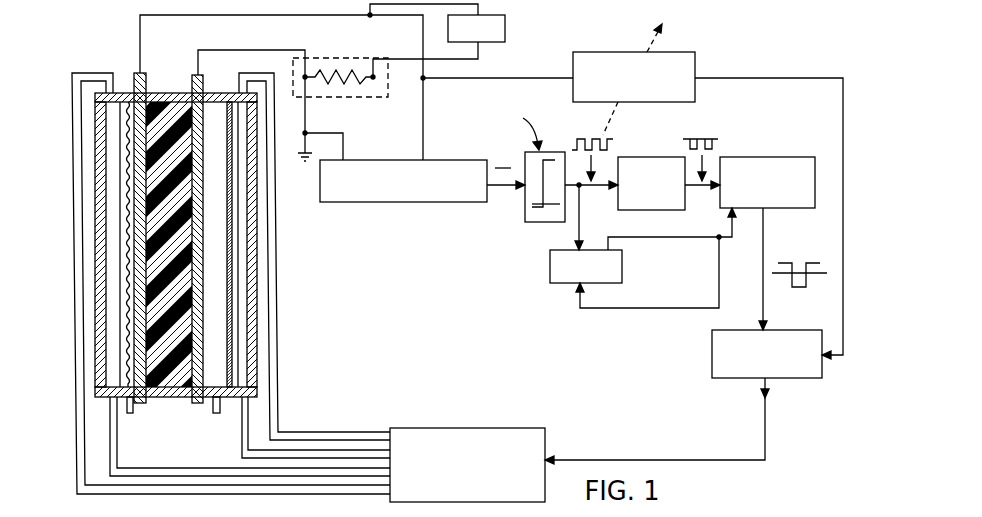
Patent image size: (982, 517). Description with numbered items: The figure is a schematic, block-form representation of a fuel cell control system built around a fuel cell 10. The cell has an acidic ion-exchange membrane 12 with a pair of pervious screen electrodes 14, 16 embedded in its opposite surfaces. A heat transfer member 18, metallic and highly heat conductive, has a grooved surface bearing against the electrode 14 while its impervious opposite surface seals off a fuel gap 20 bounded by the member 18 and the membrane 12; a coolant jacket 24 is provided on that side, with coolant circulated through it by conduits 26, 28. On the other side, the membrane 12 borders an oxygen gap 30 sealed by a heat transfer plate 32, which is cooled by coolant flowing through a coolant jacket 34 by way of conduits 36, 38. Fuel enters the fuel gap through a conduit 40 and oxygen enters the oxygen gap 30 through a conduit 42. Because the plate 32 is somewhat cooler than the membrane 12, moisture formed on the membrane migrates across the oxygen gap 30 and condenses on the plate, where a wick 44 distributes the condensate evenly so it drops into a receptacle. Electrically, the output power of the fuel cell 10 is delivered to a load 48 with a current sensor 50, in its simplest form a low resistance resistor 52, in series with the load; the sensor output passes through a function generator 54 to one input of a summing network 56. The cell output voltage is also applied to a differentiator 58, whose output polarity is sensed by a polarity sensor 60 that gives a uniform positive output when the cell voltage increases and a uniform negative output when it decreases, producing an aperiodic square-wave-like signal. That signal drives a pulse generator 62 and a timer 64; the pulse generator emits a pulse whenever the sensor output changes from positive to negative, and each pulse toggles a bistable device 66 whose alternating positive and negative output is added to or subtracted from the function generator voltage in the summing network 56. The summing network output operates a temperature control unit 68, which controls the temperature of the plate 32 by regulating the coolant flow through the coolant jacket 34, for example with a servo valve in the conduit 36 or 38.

The fuel cell 10 is at (129, 41).
The ion-exchange membrane 12 is at (164, 100).
The electrode 14 is at (137, 74).
The electrode 16 is at (201, 80).
The heat transfer member 18 is at (122, 110).
The fuel gap 20 is at (128, 326).
The coolant jacket 24 is at (90, 306).
The conduit 26 is at (118, 450).
The conduit 28 is at (77, 470).
The oxygen gap 30 is at (214, 290).
The plate 32 is at (236, 274).
The coolant jacket 34 is at (263, 218).
The conduit 36 is at (242, 432).
The conduit 38 is at (279, 414).
The conduit 40 is at (131, 413).
The conduit 42 is at (215, 413).
The wick 44 is at (231, 333).
The load 48 is at (505, 28).
The current sensor 50 is at (388, 90).
The resistor 52 is at (343, 70).
The function generator 54 is at (697, 62).
The summing network 56 is at (800, 378).
The differentiator 58 is at (372, 160).
The polarity sensor 60 is at (525, 212).
The pulse generator 62 is at (645, 157).
The timer 64 is at (553, 284).
The bistable device 66 is at (767, 157).
The temperature control unit 68 is at (545, 440).